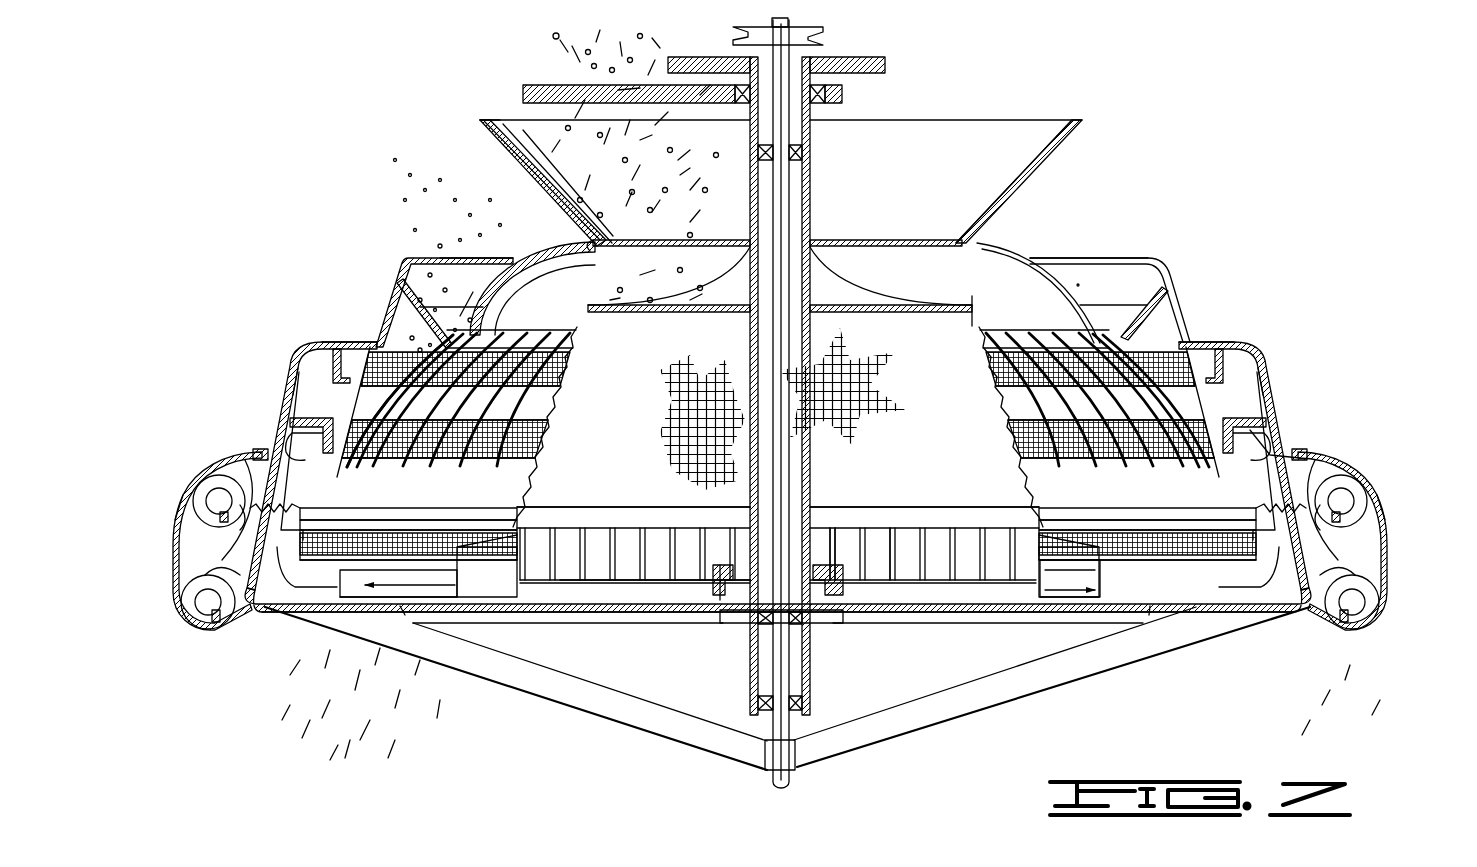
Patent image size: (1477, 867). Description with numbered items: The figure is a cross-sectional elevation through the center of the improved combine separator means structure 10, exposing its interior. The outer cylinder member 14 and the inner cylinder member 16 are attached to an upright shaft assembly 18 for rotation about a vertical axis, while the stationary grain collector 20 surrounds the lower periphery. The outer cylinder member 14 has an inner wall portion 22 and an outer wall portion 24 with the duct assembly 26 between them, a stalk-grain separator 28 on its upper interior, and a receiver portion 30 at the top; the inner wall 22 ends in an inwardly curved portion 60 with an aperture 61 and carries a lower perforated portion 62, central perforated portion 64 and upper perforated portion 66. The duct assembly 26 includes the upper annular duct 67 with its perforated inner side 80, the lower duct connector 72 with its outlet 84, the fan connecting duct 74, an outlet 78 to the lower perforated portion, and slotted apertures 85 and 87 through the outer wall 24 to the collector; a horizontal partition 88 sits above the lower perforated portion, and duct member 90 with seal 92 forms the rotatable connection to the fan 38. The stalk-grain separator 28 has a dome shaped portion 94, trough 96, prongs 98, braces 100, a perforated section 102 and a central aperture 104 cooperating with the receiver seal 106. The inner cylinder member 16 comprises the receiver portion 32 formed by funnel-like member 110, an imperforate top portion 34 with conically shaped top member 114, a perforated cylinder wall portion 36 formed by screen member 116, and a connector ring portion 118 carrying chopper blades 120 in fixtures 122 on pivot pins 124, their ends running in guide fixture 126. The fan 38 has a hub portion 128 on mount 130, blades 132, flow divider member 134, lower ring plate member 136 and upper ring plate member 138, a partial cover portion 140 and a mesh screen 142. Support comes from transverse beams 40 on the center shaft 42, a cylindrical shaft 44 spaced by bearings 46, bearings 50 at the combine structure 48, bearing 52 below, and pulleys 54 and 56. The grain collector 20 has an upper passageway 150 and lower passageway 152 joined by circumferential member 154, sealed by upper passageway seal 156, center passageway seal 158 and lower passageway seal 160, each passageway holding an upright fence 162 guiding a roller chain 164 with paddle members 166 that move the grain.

The separator means structure 10 is at (372, 126).
The outer cylinder member 14 is at (1246, 296).
The inner cylinder member 16 is at (982, 262).
The upright shaft assembly 18 is at (878, 98).
The grain collector 20 is at (196, 386).
The inner wall portion 22 is at (1270, 455).
The outer wall portion 24 is at (276, 392).
The duct assembly 26 is at (290, 378).
The stalk-grain separator 28 is at (441, 276).
The receiver portion 30 is at (1132, 257).
The inner cylinder receiver portion 32 is at (962, 113).
The imperforate cylinder top portion 34 is at (872, 284).
The perforated cylinder wall portion 36 is at (992, 356).
The fan 38 is at (869, 525).
The transverse beams 40 is at (692, 736).
The center shaft 42 is at (790, 780).
The cylindrical shaft 44 is at (812, 681).
The bearings 46 is at (806, 156).
The combine structure 48 is at (566, 90).
The bearings 50 is at (746, 102).
The bearing 52 is at (745, 619).
The pulley 54 is at (752, 30).
The pulley 56 is at (852, 57).
The inwardly curved portion 60 is at (406, 258).
The aperture 61 is at (440, 257).
The lower perforated portion 62 is at (330, 608).
The central perforated portion 64 is at (420, 462).
The upper perforated portion 66 is at (418, 352).
The upper annular duct 67 is at (312, 400).
The lower duct connector 72 is at (296, 420).
The fan connecting duct 74 is at (404, 620).
The outlet 78 is at (293, 580).
The perforated inner side 80 is at (338, 348).
The outlet 84 is at (305, 432).
The slotted aperture 85 is at (252, 510).
The slotted aperture 87 is at (232, 584).
The horizontal partition 88 is at (380, 502).
The duct member 90 is at (456, 606).
The seal 92 is at (720, 578).
The dome shaped portion 94 is at (564, 247).
The trough 96 is at (452, 294).
The prongs 98 is at (554, 406).
The braces 100 is at (399, 300).
The perforated section 102 is at (520, 336).
The aperture 104 is at (602, 249).
The receiver seal 106 is at (636, 196).
The funnel-like member 110 is at (532, 118).
The conically shaped top member 114 is at (688, 292).
The screen member 116 is at (574, 422).
The connector ring portion 118 is at (650, 520).
The chopper blades 120 is at (438, 522).
The fixtures 122 is at (518, 514).
The pivot pin 124 is at (520, 508).
The guide fixture 126 is at (396, 510).
The hub portion 128 is at (826, 556).
The mount 130 is at (824, 592).
The blades 132 is at (910, 560).
The flow divider member 134 is at (670, 562).
The lower ring plate member 136 is at (556, 606).
The upper ring plate member 138 is at (528, 540).
The partial cover portion 140 is at (715, 600).
The mesh screen 142 is at (598, 610).
The upper passageway 150 is at (193, 500).
The lower passageway 152 is at (178, 620).
The circumferential member 154 is at (205, 504).
The upper passageway seal 156 is at (258, 452).
The center passageway seal 158 is at (226, 540).
The lower passageway seal 160 is at (240, 618).
The upright fence 162 is at (222, 462).
The roller chain 164 is at (200, 488).
The paddle members 166 is at (208, 478).